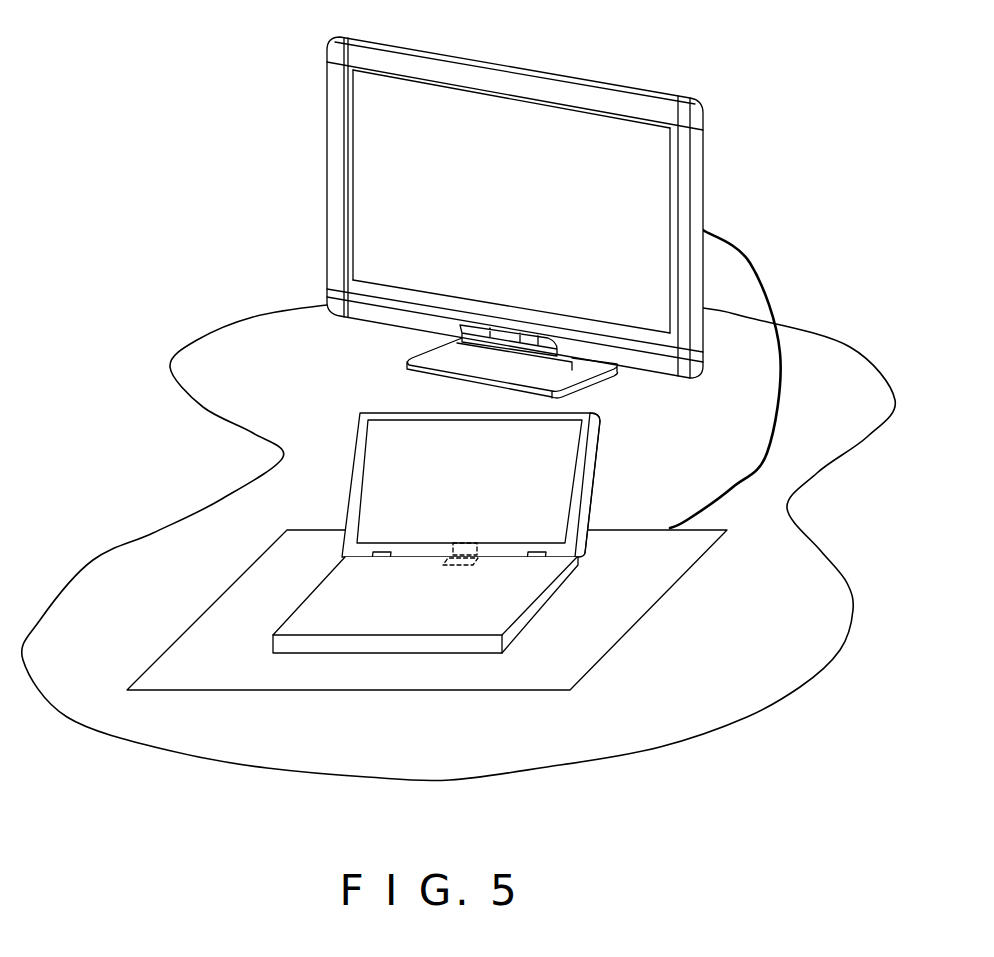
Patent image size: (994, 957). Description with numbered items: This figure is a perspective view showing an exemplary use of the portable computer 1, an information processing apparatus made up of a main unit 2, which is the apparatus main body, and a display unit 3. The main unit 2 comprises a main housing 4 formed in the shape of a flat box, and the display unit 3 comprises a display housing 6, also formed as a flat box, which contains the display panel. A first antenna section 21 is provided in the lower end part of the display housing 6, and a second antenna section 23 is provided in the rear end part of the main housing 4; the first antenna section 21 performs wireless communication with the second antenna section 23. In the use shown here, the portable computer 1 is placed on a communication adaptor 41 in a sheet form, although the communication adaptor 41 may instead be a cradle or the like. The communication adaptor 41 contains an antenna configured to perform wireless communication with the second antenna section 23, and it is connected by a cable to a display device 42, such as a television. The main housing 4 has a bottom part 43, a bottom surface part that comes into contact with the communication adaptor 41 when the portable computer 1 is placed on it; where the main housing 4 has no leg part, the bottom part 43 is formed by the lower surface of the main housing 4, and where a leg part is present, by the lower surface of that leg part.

The portable computer 1 is at (433, 573).
The main unit 2 is at (418, 645).
The display unit 3 is at (454, 487).
The main housing 4 is at (414, 630).
The display housing 6 is at (590, 452).
The first antenna section 21 is at (463, 541).
The second antenna section 23 is at (455, 566).
The communication adaptor 41 is at (648, 590).
The display device 42 is at (585, 97).
The bottom part 43 is at (550, 598).